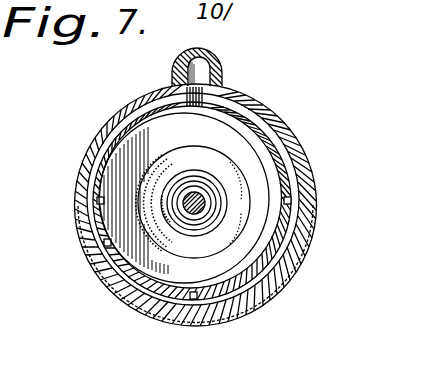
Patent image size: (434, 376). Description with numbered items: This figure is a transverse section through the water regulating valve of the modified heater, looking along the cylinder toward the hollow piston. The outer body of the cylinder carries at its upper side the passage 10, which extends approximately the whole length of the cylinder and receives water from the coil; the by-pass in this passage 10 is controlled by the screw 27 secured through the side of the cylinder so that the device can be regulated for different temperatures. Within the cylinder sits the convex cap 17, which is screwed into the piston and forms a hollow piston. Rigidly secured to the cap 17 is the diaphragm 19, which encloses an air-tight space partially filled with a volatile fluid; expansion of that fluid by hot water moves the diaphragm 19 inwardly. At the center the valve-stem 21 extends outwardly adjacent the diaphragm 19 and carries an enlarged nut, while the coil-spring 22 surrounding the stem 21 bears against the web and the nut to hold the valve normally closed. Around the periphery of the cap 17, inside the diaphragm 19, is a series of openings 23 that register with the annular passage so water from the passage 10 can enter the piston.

The passage 10 is at (204, 69).
The cap 17 is at (252, 142).
The diaphragm 19 is at (268, 238).
The valve-stem 21 is at (203, 202).
The coil-spring 22 is at (220, 213).
The openings 23 is at (270, 167).
The screw 27 is at (292, 11).